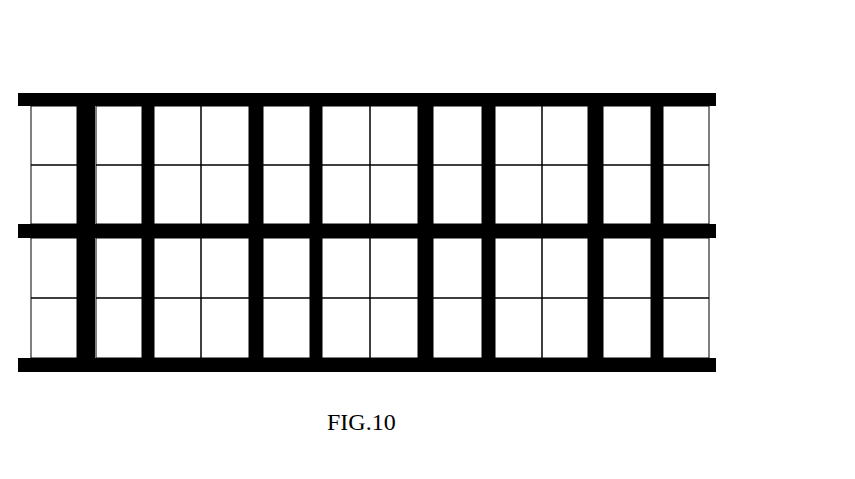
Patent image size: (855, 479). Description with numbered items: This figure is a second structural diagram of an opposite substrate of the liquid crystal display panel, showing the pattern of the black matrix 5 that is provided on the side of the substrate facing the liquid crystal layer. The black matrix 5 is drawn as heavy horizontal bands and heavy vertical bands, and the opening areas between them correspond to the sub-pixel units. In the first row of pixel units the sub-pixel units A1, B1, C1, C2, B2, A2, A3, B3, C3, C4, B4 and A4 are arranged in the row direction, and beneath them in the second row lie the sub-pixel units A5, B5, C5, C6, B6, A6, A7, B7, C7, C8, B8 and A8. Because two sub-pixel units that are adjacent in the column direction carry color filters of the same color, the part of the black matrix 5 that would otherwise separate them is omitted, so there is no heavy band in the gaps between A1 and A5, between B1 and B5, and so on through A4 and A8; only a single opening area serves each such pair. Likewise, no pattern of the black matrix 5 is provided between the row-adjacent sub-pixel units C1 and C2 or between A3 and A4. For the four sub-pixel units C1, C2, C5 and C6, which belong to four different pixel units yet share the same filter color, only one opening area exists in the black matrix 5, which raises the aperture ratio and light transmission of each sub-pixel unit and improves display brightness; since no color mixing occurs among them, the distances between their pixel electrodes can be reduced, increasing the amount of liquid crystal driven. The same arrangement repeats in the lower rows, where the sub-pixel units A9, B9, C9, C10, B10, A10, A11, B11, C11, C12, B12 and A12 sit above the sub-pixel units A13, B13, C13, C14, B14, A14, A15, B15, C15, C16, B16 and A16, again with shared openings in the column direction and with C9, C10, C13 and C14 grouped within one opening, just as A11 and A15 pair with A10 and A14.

The black matrix 5 is at (367, 199).
The sub-pixel unit A1 is at (54, 135).
The sub-pixel unit B1 is at (119, 135).
The sub-pixel unit C1 is at (177, 135).
The sub-pixel unit C2 is at (225, 135).
The sub-pixel unit B2 is at (286, 135).
The sub-pixel unit A2 is at (346, 135).
The sub-pixel unit A3 is at (394, 135).
The sub-pixel unit B3 is at (457, 135).
The sub-pixel unit C3 is at (518, 135).
The sub-pixel unit C4 is at (565, 135).
The sub-pixel unit B4 is at (627, 135).
The sub-pixel unit A4 is at (686, 135).
The sub-pixel unit A5 is at (54, 194).
The sub-pixel unit B5 is at (119, 194).
The sub-pixel unit C5 is at (177, 194).
The sub-pixel unit C6 is at (225, 194).
The sub-pixel unit B6 is at (286, 194).
The sub-pixel unit A6 is at (346, 194).
The sub-pixel unit A7 is at (394, 194).
The sub-pixel unit B7 is at (457, 194).
The sub-pixel unit C7 is at (518, 194).
The sub-pixel unit C8 is at (565, 194).
The sub-pixel unit B8 is at (627, 194).
The sub-pixel unit A8 is at (686, 194).
The sub-pixel unit A9 is at (54, 268).
The sub-pixel unit B9 is at (119, 268).
The sub-pixel unit C9 is at (177, 268).
The sub-pixel unit C10 is at (225, 268).
The sub-pixel unit B10 is at (286, 268).
The sub-pixel unit A10 is at (346, 268).
The sub-pixel unit A11 is at (394, 268).
The sub-pixel unit B11 is at (457, 268).
The sub-pixel unit C11 is at (518, 268).
The sub-pixel unit C12 is at (565, 268).
The sub-pixel unit B12 is at (627, 268).
The sub-pixel unit A12 is at (686, 268).
The sub-pixel unit A13 is at (54, 328).
The sub-pixel unit B13 is at (119, 328).
The sub-pixel unit C13 is at (177, 328).
The sub-pixel unit C14 is at (225, 328).
The sub-pixel unit B14 is at (286, 328).
The sub-pixel unit A14 is at (346, 328).
The sub-pixel unit A15 is at (394, 328).
The sub-pixel unit B15 is at (457, 328).
The sub-pixel unit C15 is at (518, 328).
The sub-pixel unit C16 is at (565, 328).
The sub-pixel unit B16 is at (627, 328).
The sub-pixel unit A16 is at (686, 328).